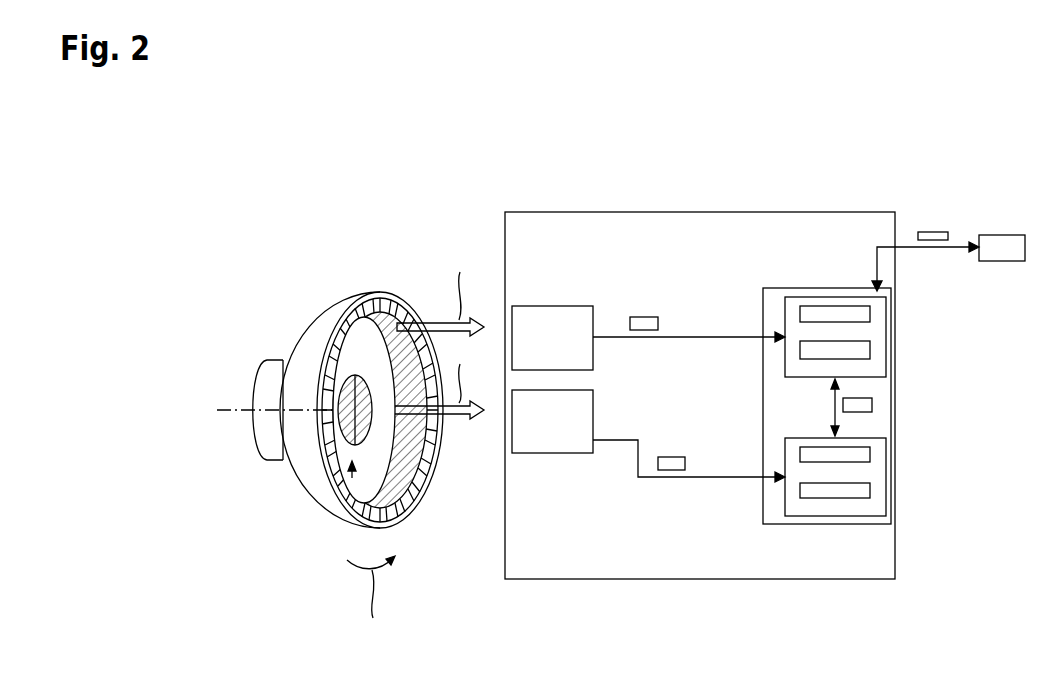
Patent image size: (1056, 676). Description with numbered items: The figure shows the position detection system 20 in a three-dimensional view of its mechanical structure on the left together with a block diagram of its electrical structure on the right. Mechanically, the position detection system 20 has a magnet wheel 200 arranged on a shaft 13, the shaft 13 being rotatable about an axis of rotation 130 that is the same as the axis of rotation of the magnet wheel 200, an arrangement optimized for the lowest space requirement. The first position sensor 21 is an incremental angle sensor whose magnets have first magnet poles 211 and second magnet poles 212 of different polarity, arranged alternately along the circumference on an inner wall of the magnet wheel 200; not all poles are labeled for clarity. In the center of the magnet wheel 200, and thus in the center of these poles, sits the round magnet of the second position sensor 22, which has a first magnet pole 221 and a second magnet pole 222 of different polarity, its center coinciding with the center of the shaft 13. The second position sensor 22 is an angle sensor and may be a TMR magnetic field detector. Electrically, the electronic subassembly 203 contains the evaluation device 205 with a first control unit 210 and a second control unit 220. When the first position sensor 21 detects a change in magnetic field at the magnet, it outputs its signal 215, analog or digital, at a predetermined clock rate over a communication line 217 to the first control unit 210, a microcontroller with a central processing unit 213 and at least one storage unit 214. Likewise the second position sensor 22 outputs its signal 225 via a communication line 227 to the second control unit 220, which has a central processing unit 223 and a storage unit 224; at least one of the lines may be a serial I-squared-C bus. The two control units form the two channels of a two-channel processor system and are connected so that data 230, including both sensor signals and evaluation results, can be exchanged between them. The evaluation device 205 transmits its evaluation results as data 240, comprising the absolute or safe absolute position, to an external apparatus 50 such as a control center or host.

The position detection system 20 is at (288, 238).
The magnet wheel 200 is at (338, 300).
The first position sensor 21 is at (382, 266).
The first magnet poles 211 is at (432, 461).
The second magnet poles 212 is at (417, 493).
The second position sensor 22 is at (352, 478).
The first magnet pole 221 is at (344, 432).
The second magnet pole 222 is at (366, 421).
The shaft 13 is at (270, 360).
The axis of rotation 130 is at (227, 403).
The electronic subassembly 203 is at (702, 212).
The evaluation device 205 is at (802, 288).
The first control unit 210 is at (857, 297).
The central processing unit 213 is at (870, 314).
The storage unit 214 is at (870, 349).
The signal 215 is at (645, 317).
The communication line 217 is at (716, 337).
The second control unit 220 is at (855, 516).
The central processing unit 223 is at (870, 452).
The storage unit 224 is at (870, 488).
The signal 225 is at (666, 457).
The communication line 227 is at (716, 477).
The data 230 is at (872, 404).
The data 240 is at (932, 232).
The external apparatus 50 is at (1003, 235).